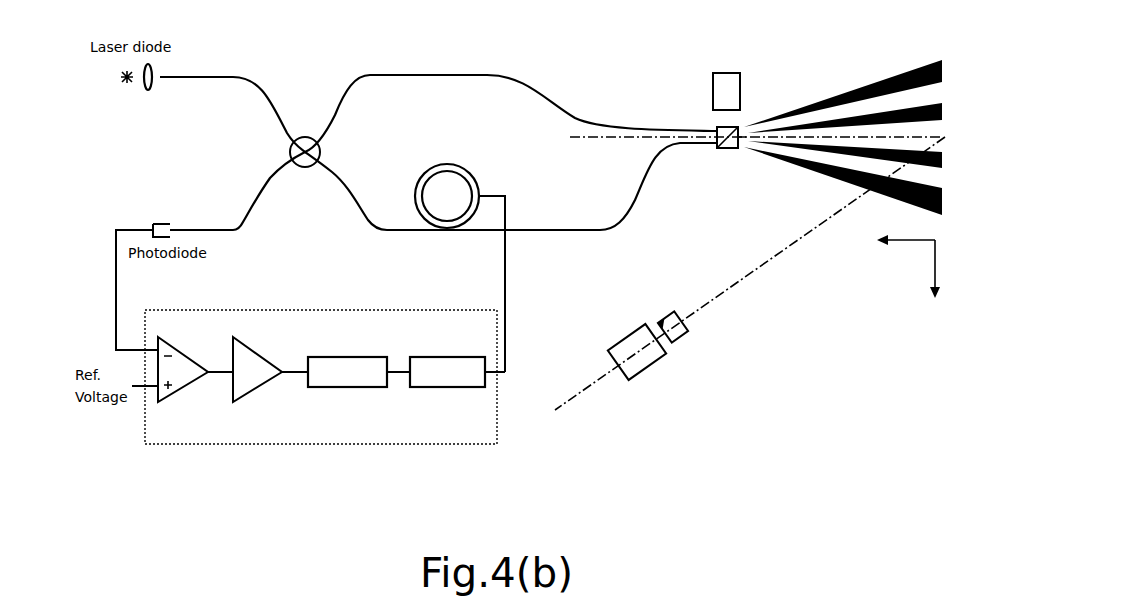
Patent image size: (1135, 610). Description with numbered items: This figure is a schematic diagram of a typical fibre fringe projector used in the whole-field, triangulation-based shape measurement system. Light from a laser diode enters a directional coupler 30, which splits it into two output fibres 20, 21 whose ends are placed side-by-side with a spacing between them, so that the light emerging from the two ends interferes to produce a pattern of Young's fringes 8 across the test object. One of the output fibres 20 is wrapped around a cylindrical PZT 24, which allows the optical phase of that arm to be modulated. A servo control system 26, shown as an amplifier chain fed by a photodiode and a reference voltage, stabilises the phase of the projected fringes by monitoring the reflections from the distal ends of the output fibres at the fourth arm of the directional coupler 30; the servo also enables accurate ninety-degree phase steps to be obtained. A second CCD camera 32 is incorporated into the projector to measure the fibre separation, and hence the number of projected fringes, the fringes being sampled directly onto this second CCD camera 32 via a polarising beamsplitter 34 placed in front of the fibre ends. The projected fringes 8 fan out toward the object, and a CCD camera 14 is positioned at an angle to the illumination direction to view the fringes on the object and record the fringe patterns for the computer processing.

The Young's fringes 8 is at (829, 76).
The CCD camera 14 is at (650, 365).
The output fibre 20 is at (625, 220).
The output fibre 21 is at (527, 100).
The cylindrical PZT 24 is at (455, 168).
The servo control system 26 is at (405, 444).
The directional coupler 30 is at (310, 72).
The second CCD camera 32 is at (715, 77).
The polarising beamsplitter 34 is at (732, 149).